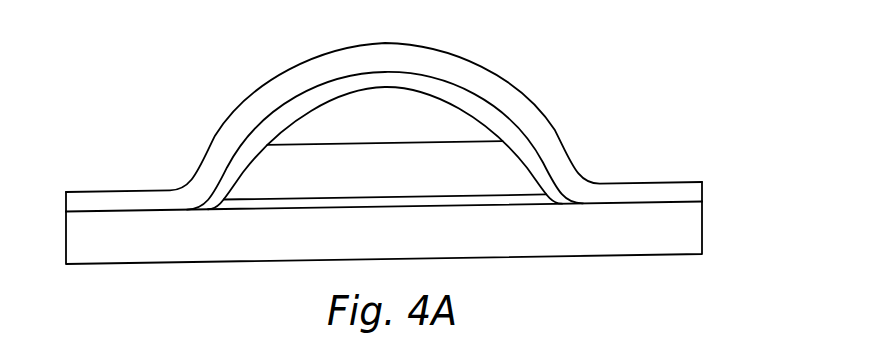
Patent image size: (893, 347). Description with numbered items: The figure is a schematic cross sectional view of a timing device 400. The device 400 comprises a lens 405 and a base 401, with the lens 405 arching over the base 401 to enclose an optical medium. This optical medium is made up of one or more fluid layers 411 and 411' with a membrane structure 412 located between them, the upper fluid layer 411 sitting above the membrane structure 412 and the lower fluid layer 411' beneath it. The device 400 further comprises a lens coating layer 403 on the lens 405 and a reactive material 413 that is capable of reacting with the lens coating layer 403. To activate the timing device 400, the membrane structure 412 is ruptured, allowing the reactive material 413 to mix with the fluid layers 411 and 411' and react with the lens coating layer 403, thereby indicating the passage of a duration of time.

The timing device 400 is at (90, 51).
The base 401 is at (703, 235).
The lens coating layer 403 is at (280, 121).
The lens 405 is at (703, 197).
The fluid layer 411 is at (384, 125).
The fluid layer 411' is at (385, 179).
The membrane structure 412 is at (467, 146).
The reactive material 413 is at (250, 198).